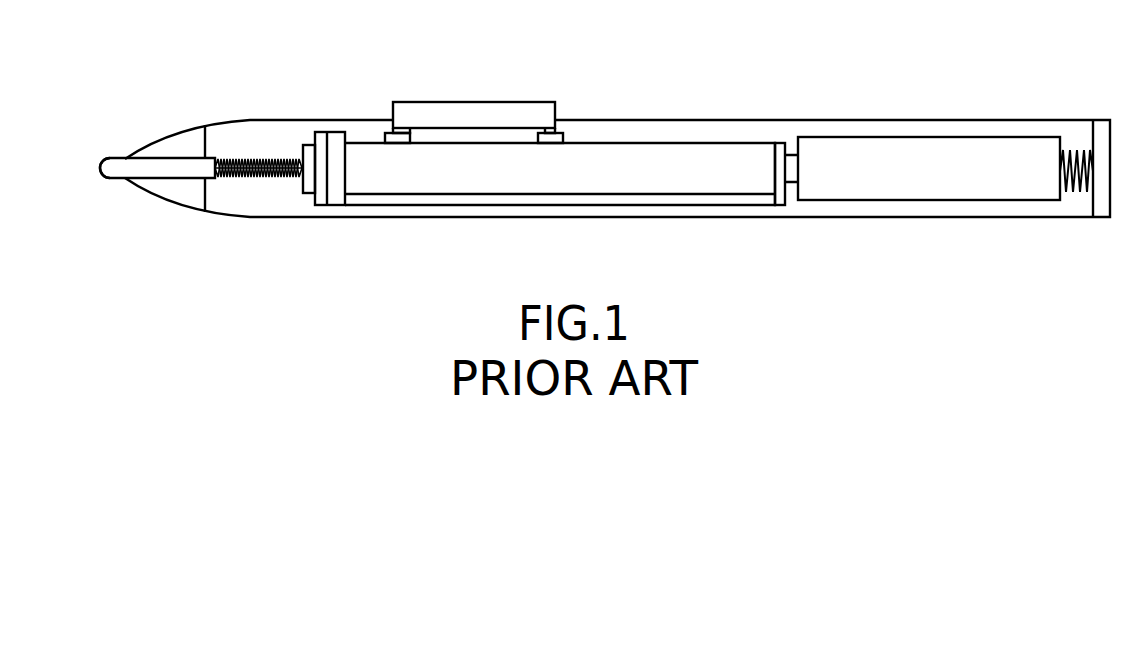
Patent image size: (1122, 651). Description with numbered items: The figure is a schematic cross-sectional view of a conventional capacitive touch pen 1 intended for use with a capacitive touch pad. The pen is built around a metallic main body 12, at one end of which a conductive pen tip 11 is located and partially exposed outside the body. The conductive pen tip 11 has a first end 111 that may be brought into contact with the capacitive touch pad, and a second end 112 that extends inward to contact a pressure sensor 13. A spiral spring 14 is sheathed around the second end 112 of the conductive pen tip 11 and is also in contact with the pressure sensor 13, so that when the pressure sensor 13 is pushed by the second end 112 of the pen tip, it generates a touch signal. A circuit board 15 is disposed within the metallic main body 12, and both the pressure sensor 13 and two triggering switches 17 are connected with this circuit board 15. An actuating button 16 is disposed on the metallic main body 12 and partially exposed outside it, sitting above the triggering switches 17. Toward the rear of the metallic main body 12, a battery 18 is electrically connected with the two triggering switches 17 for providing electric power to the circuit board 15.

The conventional capacitive touch pen 1 is at (974, 74).
The conductive pen tip 11 is at (151, 170).
The first end 111 is at (102, 168).
The second end 112 is at (253, 162).
The metallic main body 12 is at (750, 120).
The pressure sensor 13 is at (310, 182).
The spiral spring 14 is at (259, 161).
The circuit board 15 is at (667, 177).
The actuating button 16 is at (458, 110).
The triggering switches 17 is at (398, 140).
The battery 18 is at (945, 188).